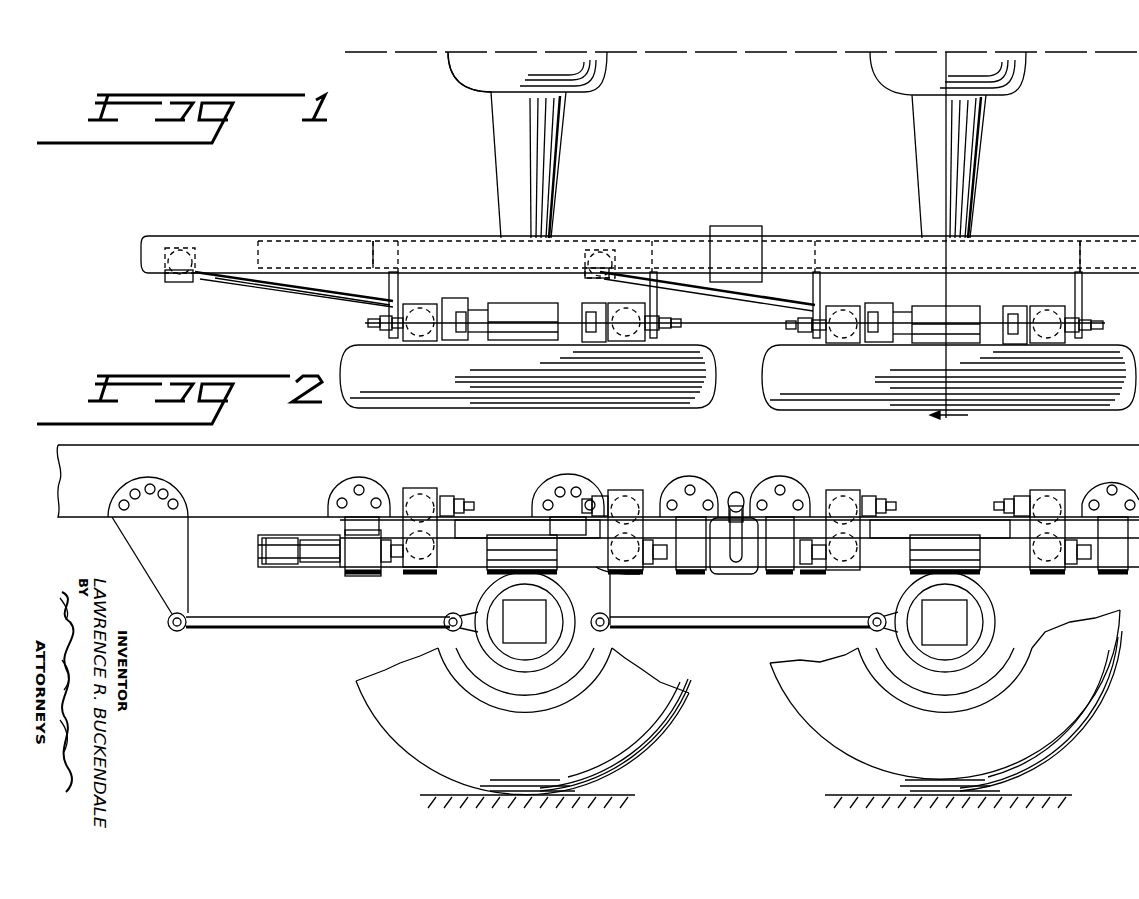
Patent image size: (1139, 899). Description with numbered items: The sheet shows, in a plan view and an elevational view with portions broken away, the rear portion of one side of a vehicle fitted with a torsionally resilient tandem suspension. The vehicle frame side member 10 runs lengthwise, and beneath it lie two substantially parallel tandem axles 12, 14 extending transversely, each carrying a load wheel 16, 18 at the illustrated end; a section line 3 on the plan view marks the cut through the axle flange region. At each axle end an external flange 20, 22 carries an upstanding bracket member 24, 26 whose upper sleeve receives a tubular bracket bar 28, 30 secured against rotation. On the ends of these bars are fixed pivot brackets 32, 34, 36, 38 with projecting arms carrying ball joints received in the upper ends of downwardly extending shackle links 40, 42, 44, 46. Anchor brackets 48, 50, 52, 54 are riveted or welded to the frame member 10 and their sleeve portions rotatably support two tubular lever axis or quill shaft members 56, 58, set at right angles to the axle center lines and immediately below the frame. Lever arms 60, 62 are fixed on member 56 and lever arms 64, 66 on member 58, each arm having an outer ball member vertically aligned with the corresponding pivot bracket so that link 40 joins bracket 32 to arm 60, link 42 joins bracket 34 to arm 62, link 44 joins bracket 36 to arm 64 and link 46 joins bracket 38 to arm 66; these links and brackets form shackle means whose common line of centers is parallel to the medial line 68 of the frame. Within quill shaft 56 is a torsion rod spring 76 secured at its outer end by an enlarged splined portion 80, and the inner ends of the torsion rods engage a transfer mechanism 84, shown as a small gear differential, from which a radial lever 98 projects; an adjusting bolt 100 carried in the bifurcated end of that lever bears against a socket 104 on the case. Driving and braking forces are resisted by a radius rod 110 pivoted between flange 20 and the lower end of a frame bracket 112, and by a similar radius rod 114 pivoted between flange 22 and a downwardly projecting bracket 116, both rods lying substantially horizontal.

In FIG. 1, the section line 3 is at (1028, 70).
In FIG. 1, the vehicle frame side member 10 is at (255, 236).
In FIG. 2, the vehicle frame side member 10 is at (572, 446).
In FIG. 1, the tandem axle 12 is at (492, 135).
In FIG. 2, the tandem axle 12 is at (552, 628).
In FIG. 1, the tandem axle 14 is at (912, 136).
In FIG. 2, the tandem axle 14 is at (975, 620).
In FIG. 1, the load wheel 16 is at (428, 405).
In FIG. 2, the load wheel 16 is at (670, 738).
In FIG. 1, the load wheel 18 is at (855, 406).
In FIG. 2, the load wheel 18 is at (812, 745).
In FIG. 2, the axle flange 20 is at (450, 632).
In FIG. 2, the axle flange 22 is at (895, 640).
In FIG. 1, the bracket member 24 is at (540, 315).
In FIG. 2, the bracket member 24 is at (490, 572).
In FIG. 1, the bracket member 26 is at (962, 316).
In FIG. 2, the bracket member 26 is at (912, 574).
In FIG. 1, the bracket bar 28 is at (478, 312).
In FIG. 2, the bracket bar 28 is at (478, 535).
In FIG. 1, the bracket bar 30 is at (900, 314).
In FIG. 2, the bracket bar 30 is at (900, 535).
In FIG. 1, the pivot bracket 32 is at (458, 341).
In FIG. 2, the pivot bracket 32 is at (454, 498).
In FIG. 1, the pivot bracket 34 is at (584, 342).
In FIG. 2, the pivot bracket 34 is at (632, 575).
In FIG. 1, the pivot bracket 36 is at (876, 343).
In FIG. 2, the pivot bracket 36 is at (870, 496).
In FIG. 1, the pivot bracket 38 is at (1005, 344).
In FIG. 2, the pivot bracket 38 is at (1020, 494).
In FIG. 1, the shackle link 40 is at (378, 338).
In FIG. 2, the shackle link 40 is at (438, 488).
In FIG. 1, the shackle link 42 is at (660, 350).
In FIG. 2, the shackle link 42 is at (612, 490).
In FIG. 1, the shackle link 44 is at (800, 346).
In FIG. 2, the shackle link 44 is at (838, 490).
In FIG. 1, the shackle link 46 is at (1090, 348).
In FIG. 2, the shackle link 46 is at (1038, 490).
In FIG. 2, the anchor bracket 48 is at (342, 488).
In FIG. 2, the anchor bracket 50 is at (608, 496).
In FIG. 2, the anchor bracket 52 is at (795, 486).
In FIG. 2, the anchor bracket 54 is at (1100, 490).
In FIG. 1, the lever axis member 56 is at (432, 236).
In FIG. 2, the lever axis member 56 is at (279, 568).
In FIG. 1, the lever axis member 58 is at (1038, 238).
In FIG. 1, the lever arm 60 is at (386, 303).
In FIG. 2, the lever arm 60 is at (392, 568).
In FIG. 1, the lever arm 62 is at (658, 305).
In FIG. 2, the lever arm 62 is at (660, 570).
In FIG. 1, the lever arm 64 is at (811, 312).
In FIG. 2, the lever arm 64 is at (814, 570).
In FIG. 1, the lever arm 66 is at (1083, 305).
In FIG. 2, the lever arm 66 is at (1080, 570).
In FIG. 1, the medial line of the vehicle frame 68 is at (446, 54).
In FIG. 2, the torsion rod spring 76 is at (319, 568).
In FIG. 2, the splined end portion 80 is at (272, 536).
In FIG. 1, the transfer mechanism 84 is at (730, 226).
In FIG. 2, the transfer mechanism 84 is at (740, 576).
In FIG. 2, the lever 98 is at (744, 550).
In FIG. 2, the adjusting bolt 100 is at (718, 486).
In FIG. 2, the socket 104 is at (744, 496).
In FIG. 1, the radius rod 110 is at (290, 293).
In FIG. 2, the radius rod 110 is at (276, 629).
In FIG. 2, the bracket 112 is at (130, 546).
In FIG. 1, the radius rod 114 is at (742, 296).
In FIG. 2, the radius rod 114 is at (706, 629).
In FIG. 2, the bracket 116 is at (612, 604).